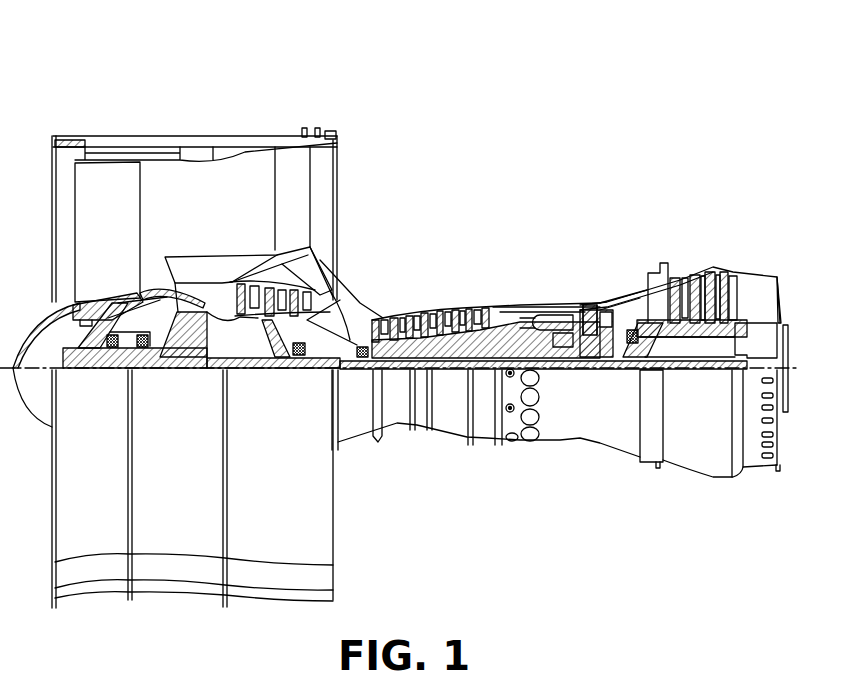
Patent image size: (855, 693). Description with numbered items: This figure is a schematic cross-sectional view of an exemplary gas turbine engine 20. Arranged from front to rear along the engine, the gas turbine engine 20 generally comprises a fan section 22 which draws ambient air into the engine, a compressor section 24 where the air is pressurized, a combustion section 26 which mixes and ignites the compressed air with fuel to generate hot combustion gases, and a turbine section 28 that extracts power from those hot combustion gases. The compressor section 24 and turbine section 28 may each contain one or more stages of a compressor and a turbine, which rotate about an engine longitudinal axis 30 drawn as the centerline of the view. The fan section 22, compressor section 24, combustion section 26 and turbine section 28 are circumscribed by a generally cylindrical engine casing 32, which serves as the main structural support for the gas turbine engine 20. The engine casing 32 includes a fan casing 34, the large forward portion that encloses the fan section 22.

The gas turbine engine 20 is at (644, 174).
The fan section 22 is at (195, 115).
The compressor section 24 is at (374, 275).
The combustion section 26 is at (541, 262).
The turbine section 28 is at (674, 260).
The engine longitudinal axis 30 is at (803, 367).
The engine casing 32 is at (562, 408).
The fan casing 34 is at (298, 533).